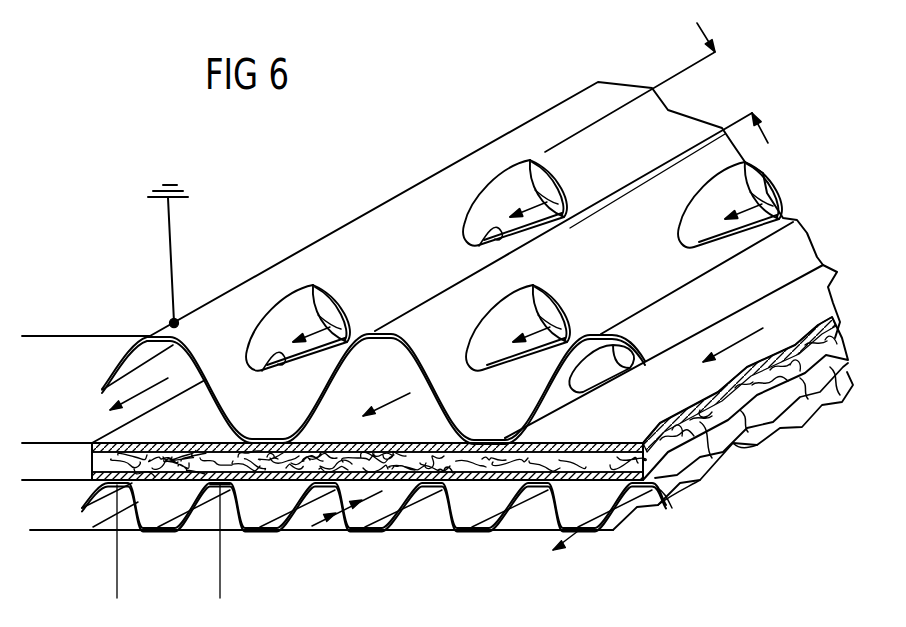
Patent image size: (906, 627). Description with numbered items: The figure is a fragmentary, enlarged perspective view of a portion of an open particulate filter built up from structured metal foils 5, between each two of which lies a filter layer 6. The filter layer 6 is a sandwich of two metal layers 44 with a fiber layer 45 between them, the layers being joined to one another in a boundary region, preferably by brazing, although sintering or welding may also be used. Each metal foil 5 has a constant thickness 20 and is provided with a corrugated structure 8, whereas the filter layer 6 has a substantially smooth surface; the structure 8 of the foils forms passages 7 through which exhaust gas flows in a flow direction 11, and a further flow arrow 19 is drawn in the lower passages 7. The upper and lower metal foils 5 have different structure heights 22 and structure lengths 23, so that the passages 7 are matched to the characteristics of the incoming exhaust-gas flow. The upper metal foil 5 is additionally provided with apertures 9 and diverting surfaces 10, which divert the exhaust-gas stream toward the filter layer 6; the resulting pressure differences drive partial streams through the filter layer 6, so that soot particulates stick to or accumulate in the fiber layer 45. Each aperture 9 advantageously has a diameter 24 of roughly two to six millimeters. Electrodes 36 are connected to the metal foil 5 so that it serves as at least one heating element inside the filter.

The metal foil 5 is at (213, 322).
The filter layer 6 is at (616, 532).
The passage 7 is at (432, 522).
The structure 8 is at (236, 510).
The aperture 9 is at (296, 293).
The diverting surface 10 is at (262, 371).
The flow direction 11 is at (340, 291).
The flow direction 19 is at (333, 516).
The thickness 20 is at (62, 452).
The structure height 22 is at (62, 562).
The structure length 23 is at (220, 588).
The diameter 24 is at (656, 87).
The electrode 36 is at (168, 233).
The metal layer 44 is at (803, 400).
The fiber layer 45 is at (705, 482).